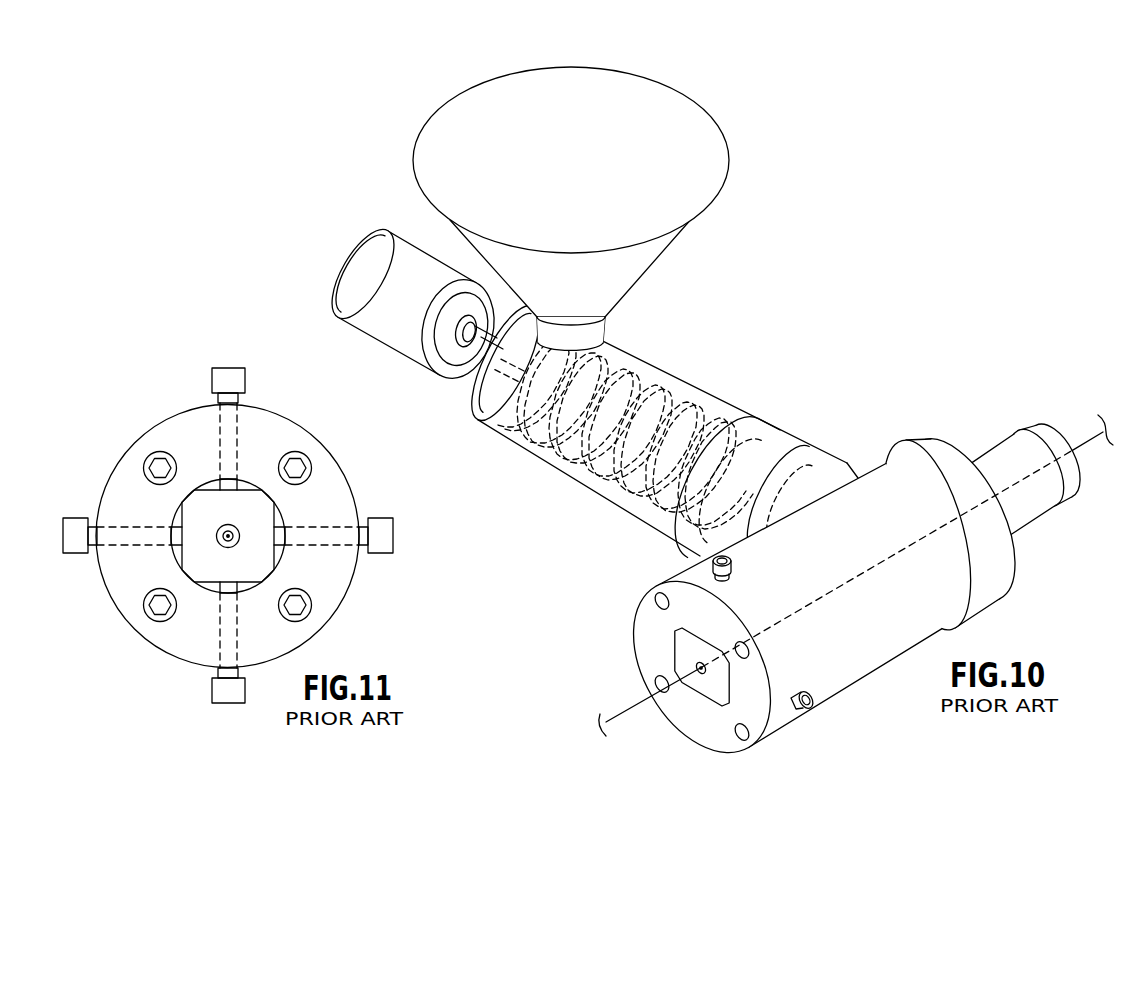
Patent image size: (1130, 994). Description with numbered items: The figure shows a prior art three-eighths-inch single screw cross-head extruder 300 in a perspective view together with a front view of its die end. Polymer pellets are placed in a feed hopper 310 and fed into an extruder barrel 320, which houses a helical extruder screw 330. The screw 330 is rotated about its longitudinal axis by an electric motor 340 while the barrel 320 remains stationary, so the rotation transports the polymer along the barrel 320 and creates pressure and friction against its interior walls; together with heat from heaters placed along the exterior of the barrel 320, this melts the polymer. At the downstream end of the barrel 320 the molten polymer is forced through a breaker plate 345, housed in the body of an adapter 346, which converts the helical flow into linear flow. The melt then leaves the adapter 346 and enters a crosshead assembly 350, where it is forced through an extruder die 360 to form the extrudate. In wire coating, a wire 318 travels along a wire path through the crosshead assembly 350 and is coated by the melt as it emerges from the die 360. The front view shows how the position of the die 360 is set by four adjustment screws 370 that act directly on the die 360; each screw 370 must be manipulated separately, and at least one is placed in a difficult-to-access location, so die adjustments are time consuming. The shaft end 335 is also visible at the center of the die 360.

In FIG. 10, the extruder 300 is at (895, 192).
In FIG. 10, the feed hopper 310 is at (726, 134).
In FIG. 10, the wire 318 is at (606, 716).
In FIG. 10, the extruder barrel 320 is at (540, 462).
In FIG. 10, the extruder screw 330 is at (605, 498).
In FIG. 11, the output shaft 335 is at (240, 532).
In FIG. 10, the electric motor 340 is at (364, 238).
In FIG. 10, the breaker plate 345 is at (774, 455).
In FIG. 10, the adapter 346 is at (834, 468).
In FIG. 10, the crosshead assembly 350 is at (897, 452).
In FIG. 10, the extruder die 360 is at (688, 657).
In FIG. 11, the extruder die 360 is at (210, 497).
In FIG. 10, the adjustment screws 370 is at (810, 708).
In FIG. 11, the adjustment screws 370 is at (226, 368).